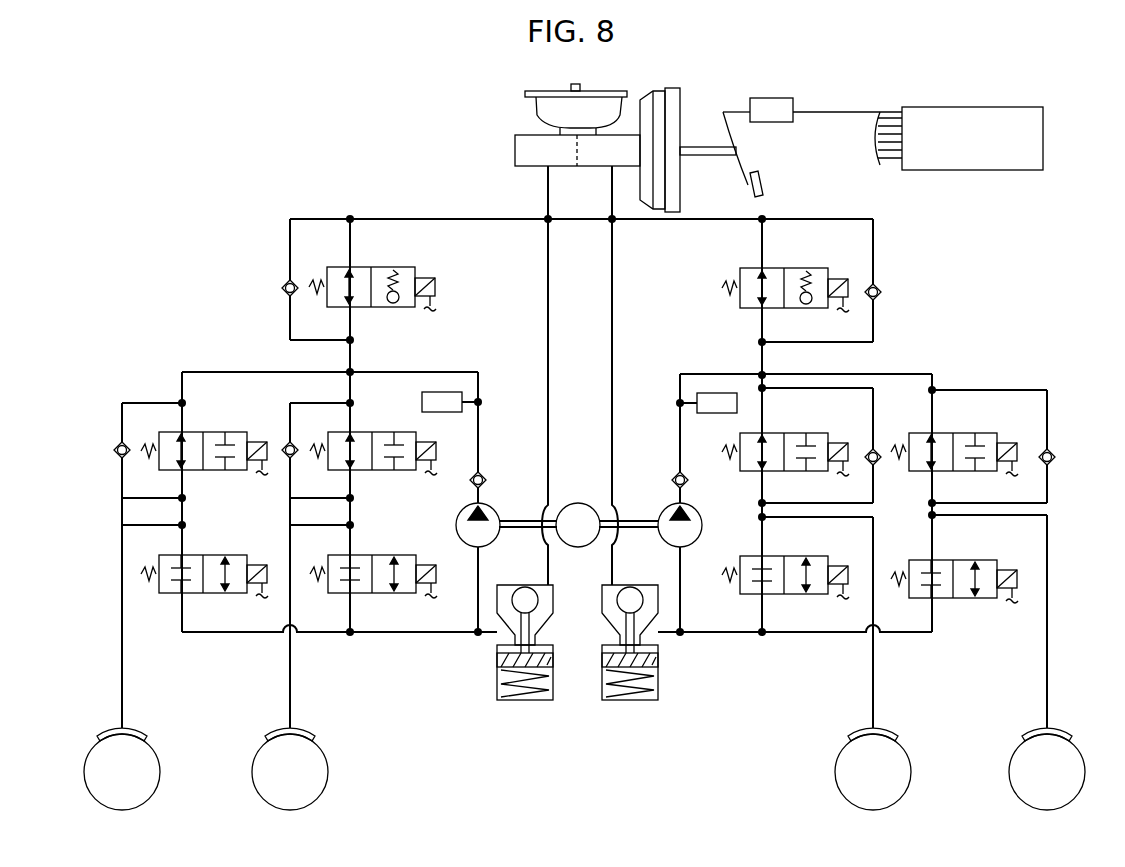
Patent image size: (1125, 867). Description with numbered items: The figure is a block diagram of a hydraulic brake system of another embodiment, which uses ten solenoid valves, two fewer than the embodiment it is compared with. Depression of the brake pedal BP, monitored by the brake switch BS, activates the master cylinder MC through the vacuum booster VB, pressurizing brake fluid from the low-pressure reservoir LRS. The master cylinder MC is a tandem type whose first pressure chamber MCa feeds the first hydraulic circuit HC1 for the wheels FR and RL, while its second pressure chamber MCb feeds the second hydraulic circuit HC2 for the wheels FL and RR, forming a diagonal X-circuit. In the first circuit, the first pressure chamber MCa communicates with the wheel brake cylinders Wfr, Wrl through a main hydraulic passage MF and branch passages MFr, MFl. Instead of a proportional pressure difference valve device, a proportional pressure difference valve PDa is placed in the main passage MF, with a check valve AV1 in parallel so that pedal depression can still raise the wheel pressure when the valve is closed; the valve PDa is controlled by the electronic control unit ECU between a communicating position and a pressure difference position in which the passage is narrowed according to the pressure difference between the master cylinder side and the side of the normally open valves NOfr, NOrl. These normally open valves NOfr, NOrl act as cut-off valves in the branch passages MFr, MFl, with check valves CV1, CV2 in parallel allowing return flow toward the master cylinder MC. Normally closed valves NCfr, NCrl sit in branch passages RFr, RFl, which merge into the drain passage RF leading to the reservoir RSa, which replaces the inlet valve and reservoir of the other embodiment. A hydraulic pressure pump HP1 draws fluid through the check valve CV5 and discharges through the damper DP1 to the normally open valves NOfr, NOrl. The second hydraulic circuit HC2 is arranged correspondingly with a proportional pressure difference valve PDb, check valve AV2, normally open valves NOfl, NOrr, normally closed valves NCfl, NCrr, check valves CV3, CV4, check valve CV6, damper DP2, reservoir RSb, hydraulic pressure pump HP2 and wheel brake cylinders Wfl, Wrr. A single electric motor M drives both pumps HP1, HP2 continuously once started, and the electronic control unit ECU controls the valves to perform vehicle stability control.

The low-pressure reservoir LRS is at (548, 113).
The master cylinder MC is at (515, 140).
The first pressure chamber MCa is at (530, 162).
The second pressure chamber MCb is at (597, 162).
The vacuum booster VB is at (688, 188).
The brake pedal BP is at (737, 170).
The brake switch BS is at (812, 111).
The electronic control unit ECU is at (959, 138).
The first hydraulic circuit HC1 is at (396, 212).
The second hydraulic circuit HC2 is at (791, 212).
The proportional pressure difference valve PDa is at (372, 267).
The proportional pressure difference valve PDb is at (783, 268).
The check valve AV1 is at (280, 290).
The check valve AV2 is at (895, 287).
The main hydraulic passage MF is at (348, 366).
The branch hydraulic passage MFr is at (183, 395).
The branch hydraulic passage MFl is at (351, 395).
The normally open valve NOfr is at (205, 432).
The normally closed valve NCfr is at (205, 555).
The normally open valve NOrl is at (366, 432).
The normally closed valve NCrl is at (374, 555).
The normally open valve NOfl is at (784, 433).
The normally closed valve NCfl is at (784, 556).
The normally open valve NOrr is at (953, 433).
The normally closed valve NCrr is at (953, 560).
The check valve CV1 is at (122, 440).
The check valve CV2 is at (290, 440).
The check valve CV3 is at (866, 452).
The check valve CV4 is at (1041, 452).
The check valve CV5 is at (483, 475).
The check valve CV6 is at (677, 473).
The damper DP1 is at (427, 412).
The damper DP2 is at (707, 414).
The hydraulic pressure pump HP1 is at (491, 507).
The hydraulic pressure pump HP2 is at (666, 507).
The electric motor M is at (578, 525).
The branch passage RFr is at (218, 634).
The branch passage RFl is at (353, 620).
The drain passage RF is at (423, 634).
The reservoir RSa is at (497, 657).
The reservoir RSb is at (658, 657).
The wheel brake cylinder Wfr is at (105, 736).
The wheel brake cylinder Wrl is at (272, 736).
The wheel brake cylinder Wfl is at (885, 736).
The wheel brake cylinder Wrr is at (1059, 736).